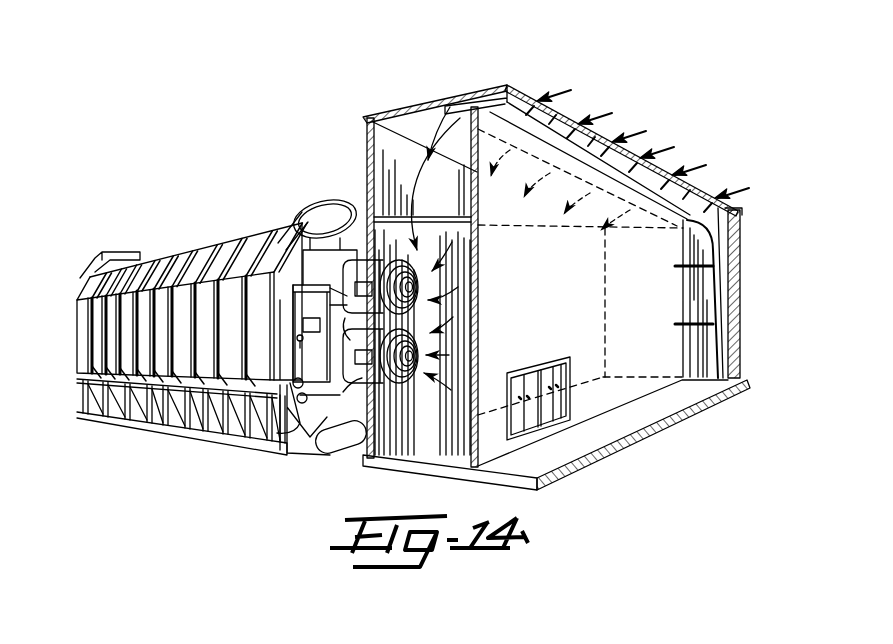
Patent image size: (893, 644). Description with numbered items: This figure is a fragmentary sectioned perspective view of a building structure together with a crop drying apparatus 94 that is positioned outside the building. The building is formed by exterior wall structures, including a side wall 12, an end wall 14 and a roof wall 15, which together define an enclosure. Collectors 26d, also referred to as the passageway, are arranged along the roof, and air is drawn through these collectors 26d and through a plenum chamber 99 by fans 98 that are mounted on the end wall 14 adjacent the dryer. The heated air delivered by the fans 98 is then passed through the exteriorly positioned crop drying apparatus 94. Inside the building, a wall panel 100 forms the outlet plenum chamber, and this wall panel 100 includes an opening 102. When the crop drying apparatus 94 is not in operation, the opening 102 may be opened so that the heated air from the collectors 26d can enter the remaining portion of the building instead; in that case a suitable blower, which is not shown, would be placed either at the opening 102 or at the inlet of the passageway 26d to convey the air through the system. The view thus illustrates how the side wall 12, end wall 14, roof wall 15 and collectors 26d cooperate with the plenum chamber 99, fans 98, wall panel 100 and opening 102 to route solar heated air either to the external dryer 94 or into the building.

The side wall 12 is at (742, 289).
The end wall 14 is at (364, 157).
The roof wall 15 is at (499, 82).
The collectors 26d is at (664, 150).
The crop drying apparatus 94 is at (207, 250).
The fans 98 is at (345, 340).
The plenum chamber 99 is at (447, 434).
The wall panel 100 is at (558, 320).
The opening 102 is at (560, 372).